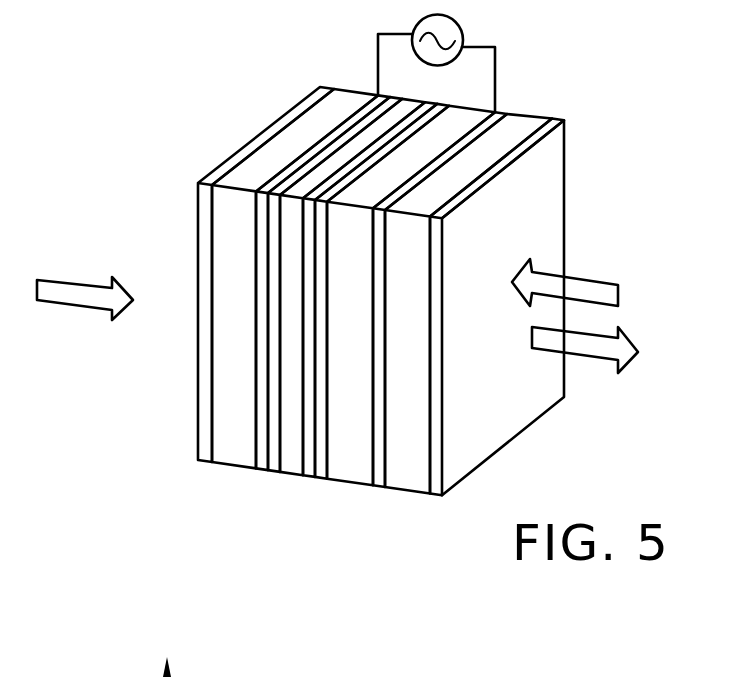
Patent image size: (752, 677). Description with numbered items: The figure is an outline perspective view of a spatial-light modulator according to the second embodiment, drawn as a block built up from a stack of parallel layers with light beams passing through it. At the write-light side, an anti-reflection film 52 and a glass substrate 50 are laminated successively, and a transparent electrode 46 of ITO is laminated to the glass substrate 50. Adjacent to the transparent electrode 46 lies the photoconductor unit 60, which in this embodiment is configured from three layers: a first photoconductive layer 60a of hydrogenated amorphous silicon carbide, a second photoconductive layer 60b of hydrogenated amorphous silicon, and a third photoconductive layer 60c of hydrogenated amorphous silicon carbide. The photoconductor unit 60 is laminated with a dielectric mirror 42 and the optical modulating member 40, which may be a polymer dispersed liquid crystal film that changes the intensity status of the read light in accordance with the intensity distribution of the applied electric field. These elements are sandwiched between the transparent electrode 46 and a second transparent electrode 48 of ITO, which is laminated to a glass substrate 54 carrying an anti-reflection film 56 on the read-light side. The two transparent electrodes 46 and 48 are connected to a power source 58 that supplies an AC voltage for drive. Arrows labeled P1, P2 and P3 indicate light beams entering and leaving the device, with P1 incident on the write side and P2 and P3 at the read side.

The optical modulating member 40 is at (360, 472).
The dielectric mirror 42 is at (433, 107).
The transparent electrode 46 is at (368, 107).
The transparent electrode 48 is at (504, 125).
The glass substrate 50 is at (340, 103).
The anti-reflection film 52 is at (280, 122).
The glass substrate 54 is at (527, 127).
The anti-reflection film 56 is at (552, 177).
The power source 58 is at (462, 20).
The photoconductor unit 60 is at (310, 333).
The first photoconductive layer 60a is at (275, 470).
The second photoconductive layer 60b is at (290, 467).
The third photoconductive layer 60c is at (370, 319).
The incident light beam P1 is at (68, 290).
The reflected light beam P2 is at (592, 288).
The transmitted light beam P3 is at (593, 350).